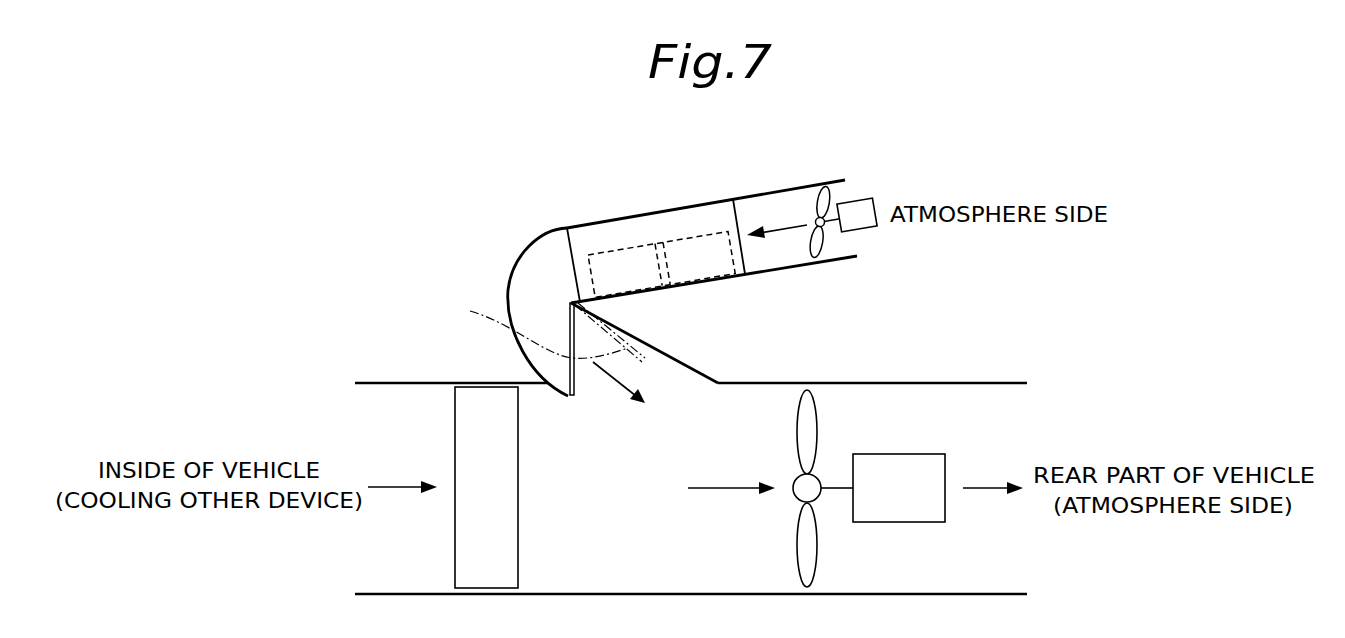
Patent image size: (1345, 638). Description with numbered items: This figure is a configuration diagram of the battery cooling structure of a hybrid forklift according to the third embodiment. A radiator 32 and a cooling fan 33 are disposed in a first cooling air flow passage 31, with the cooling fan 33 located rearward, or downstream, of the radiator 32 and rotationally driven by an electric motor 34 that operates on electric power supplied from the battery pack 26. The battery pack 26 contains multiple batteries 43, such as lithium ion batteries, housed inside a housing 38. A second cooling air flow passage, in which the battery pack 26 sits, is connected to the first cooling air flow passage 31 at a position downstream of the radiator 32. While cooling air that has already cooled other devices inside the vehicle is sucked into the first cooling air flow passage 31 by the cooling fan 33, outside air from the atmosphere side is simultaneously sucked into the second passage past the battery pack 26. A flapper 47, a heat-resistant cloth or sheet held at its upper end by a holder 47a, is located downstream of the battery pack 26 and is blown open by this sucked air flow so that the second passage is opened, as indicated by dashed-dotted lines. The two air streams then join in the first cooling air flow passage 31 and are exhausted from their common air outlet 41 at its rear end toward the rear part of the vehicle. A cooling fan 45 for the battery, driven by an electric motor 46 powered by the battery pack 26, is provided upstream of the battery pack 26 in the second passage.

The battery pack 26 is at (655, 230).
The batteries 43 is at (615, 250).
The housing 38 is at (742, 217).
The cooling fan for battery 45 is at (825, 197).
The electric motor 46 is at (867, 198).
The holder 47a is at (571, 303).
The flapper 47 is at (570, 338).
The radiator 32 is at (453, 410).
The first cooling air flow passage 31 is at (735, 382).
The air outlet 41 is at (1018, 387).
The cooling fan 33 is at (817, 412).
The electric motor 34 is at (902, 453).